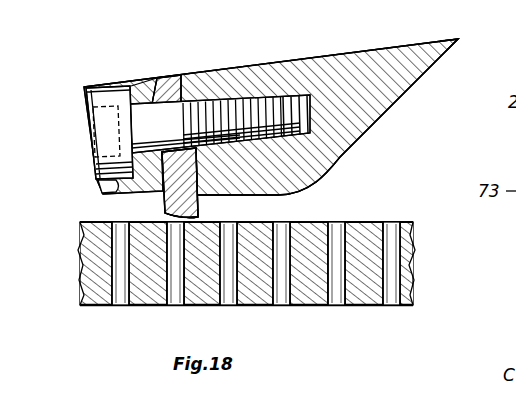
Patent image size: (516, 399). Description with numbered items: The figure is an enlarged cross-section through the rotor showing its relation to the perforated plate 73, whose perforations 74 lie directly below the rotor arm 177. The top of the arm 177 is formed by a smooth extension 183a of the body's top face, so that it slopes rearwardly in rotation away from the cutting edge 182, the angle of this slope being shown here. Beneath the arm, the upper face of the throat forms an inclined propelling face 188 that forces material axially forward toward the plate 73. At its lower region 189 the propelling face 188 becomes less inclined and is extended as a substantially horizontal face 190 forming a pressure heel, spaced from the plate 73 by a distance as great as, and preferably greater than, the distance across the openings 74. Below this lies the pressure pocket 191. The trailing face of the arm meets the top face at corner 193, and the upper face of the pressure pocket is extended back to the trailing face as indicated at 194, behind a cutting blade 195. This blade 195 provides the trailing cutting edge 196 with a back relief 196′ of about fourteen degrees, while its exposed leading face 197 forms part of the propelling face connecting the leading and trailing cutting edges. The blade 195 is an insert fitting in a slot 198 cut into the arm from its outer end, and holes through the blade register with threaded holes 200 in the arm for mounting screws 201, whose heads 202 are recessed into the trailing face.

The plate 73 is at (412, 262).
The perforations 74 is at (395, 295).
The arm 177 is at (428, 90).
The cutting edge 182 is at (458, 39).
The extension of the top face 183a is at (209, 61).
The propelling face 188 is at (388, 122).
The lower region of the propelling face 189 is at (311, 192).
The horizontal face 190 is at (204, 210).
The pressure pocket 191 is at (284, 208).
The corner 193 is at (85, 88).
The extension of the upper face of the pressure pocket 194 is at (100, 187).
The cutting blade 195 is at (172, 79).
The trailing cutting edge 196 is at (168, 211).
The back relief 196′ is at (176, 216).
The leading face of the blade 197 is at (201, 222).
The slot 198 is at (155, 80).
The threaded holes 200 is at (302, 110).
The mounting screws 201 is at (268, 105).
The heads 202 is at (92, 136).